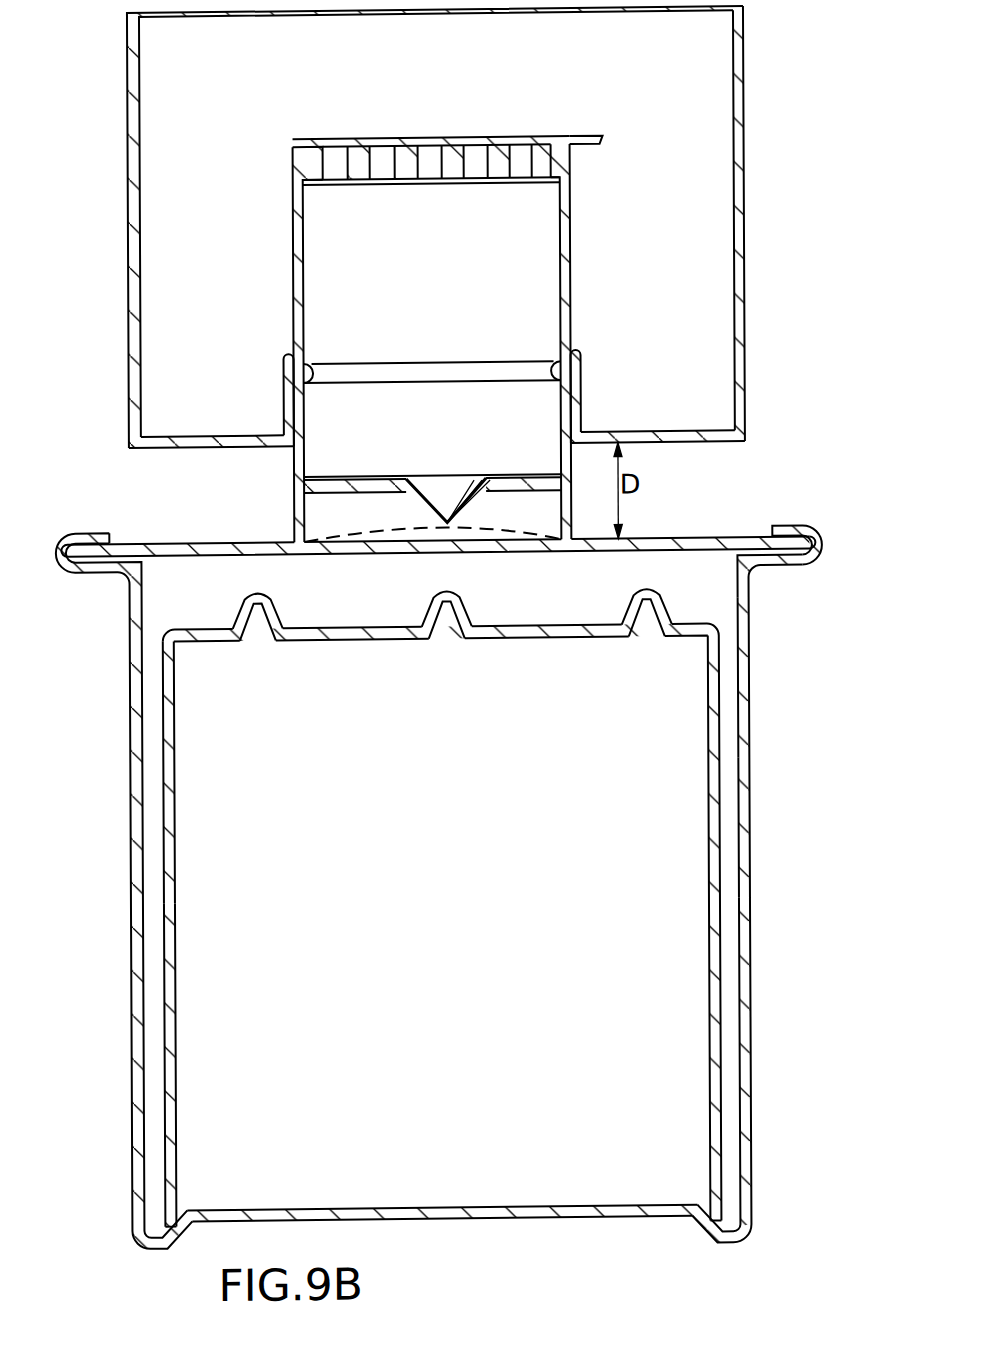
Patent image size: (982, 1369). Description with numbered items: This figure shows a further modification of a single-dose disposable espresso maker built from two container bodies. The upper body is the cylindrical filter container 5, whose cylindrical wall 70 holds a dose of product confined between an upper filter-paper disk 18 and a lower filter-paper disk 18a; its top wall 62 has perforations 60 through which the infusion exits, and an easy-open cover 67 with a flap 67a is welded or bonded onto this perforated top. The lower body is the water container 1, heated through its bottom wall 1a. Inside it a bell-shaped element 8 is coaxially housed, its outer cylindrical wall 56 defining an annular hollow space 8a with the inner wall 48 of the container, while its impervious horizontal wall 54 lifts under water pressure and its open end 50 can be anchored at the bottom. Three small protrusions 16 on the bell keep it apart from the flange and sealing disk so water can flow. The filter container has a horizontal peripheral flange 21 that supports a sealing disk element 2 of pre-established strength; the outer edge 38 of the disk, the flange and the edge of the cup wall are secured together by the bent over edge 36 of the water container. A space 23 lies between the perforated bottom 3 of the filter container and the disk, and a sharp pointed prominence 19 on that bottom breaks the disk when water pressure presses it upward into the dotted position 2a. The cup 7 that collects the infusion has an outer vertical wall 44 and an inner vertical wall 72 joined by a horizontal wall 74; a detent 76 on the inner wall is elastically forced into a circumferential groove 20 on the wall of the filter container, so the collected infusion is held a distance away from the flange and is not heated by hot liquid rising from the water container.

The water container 1 is at (463, 903).
The bottom wall 1a is at (462, 1207).
The sealing disk element 2 is at (438, 544).
The deformed position of sealing disk 2a is at (378, 536).
The perforated bottom 3 is at (388, 478).
The filter container 5 is at (396, 328).
The cup 7 is at (443, 227).
The bell-shaped element 8 is at (175, 966).
The annular hollow space 8a is at (750, 968).
The small protrusions 16 is at (237, 604).
The upper filter-paper disk 18 is at (545, 183).
The lower filter-paper disk 18a is at (505, 478).
The sharp pointed prominence 19 is at (458, 522).
The circumferential groove 20 is at (308, 366).
The horizontal peripheral flange 21 is at (693, 540).
The space 23 is at (325, 516).
The bent over edge 36 is at (822, 540).
The outer edge of sealing disk 38 is at (728, 557).
The outer vertical wall 44 is at (746, 232).
The inner wall 48 is at (750, 820).
The open end 50 is at (594, 1212).
The horizontal wall 54 is at (441, 897).
The outer cylindrical wall 56 is at (175, 836).
The perforations 60 is at (389, 155).
The top wall 62 is at (295, 160).
The cover 67 is at (495, 137).
The flap 67a is at (582, 137).
The cylindrical wall 70 is at (562, 270).
The inner vertical wall 72 is at (285, 400).
The horizontal wall 74 is at (648, 433).
The detent 76 is at (563, 365).